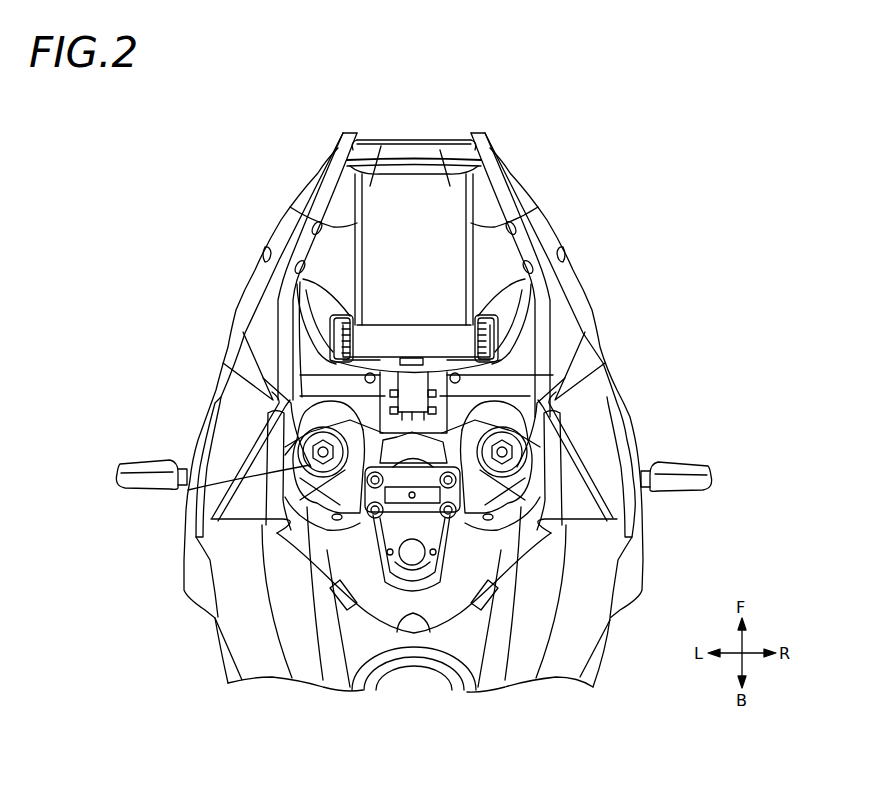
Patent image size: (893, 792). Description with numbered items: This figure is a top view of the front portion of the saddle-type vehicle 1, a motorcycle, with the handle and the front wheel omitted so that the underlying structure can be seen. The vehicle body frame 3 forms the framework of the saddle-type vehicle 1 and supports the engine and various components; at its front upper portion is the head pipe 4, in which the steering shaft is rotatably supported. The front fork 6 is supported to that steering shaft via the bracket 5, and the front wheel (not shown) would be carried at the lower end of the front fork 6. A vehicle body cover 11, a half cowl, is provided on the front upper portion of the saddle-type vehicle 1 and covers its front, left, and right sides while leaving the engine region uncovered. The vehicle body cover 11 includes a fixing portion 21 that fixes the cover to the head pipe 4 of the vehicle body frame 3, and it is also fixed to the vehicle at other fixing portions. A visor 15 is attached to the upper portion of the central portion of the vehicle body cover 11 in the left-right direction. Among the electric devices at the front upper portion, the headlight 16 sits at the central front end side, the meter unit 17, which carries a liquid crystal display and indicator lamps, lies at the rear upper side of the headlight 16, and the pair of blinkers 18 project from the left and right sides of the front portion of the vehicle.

The saddle-type vehicle 1 is at (590, 136).
The vehicle body frame 3 is at (458, 419).
The head pipe 4 is at (300, 396).
The bracket 5 is at (317, 470).
The front fork 6 is at (323, 367).
The vehicle body cover 11 is at (281, 229).
The visor 15 is at (396, 190).
The headlight 16 is at (436, 183).
The meter unit 17 is at (410, 337).
The blinkers 18 is at (140, 463).
The fixing portion 21 is at (413, 390).